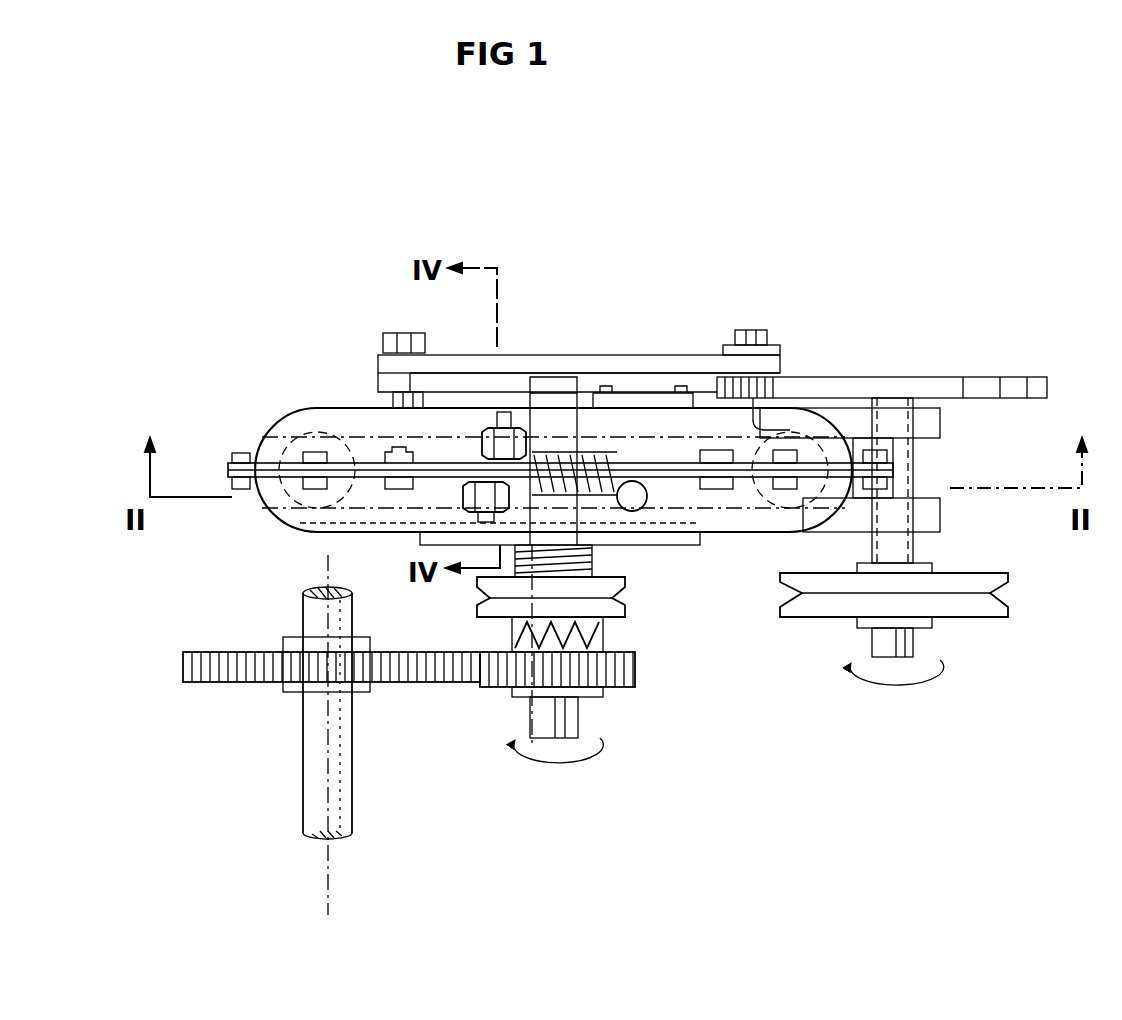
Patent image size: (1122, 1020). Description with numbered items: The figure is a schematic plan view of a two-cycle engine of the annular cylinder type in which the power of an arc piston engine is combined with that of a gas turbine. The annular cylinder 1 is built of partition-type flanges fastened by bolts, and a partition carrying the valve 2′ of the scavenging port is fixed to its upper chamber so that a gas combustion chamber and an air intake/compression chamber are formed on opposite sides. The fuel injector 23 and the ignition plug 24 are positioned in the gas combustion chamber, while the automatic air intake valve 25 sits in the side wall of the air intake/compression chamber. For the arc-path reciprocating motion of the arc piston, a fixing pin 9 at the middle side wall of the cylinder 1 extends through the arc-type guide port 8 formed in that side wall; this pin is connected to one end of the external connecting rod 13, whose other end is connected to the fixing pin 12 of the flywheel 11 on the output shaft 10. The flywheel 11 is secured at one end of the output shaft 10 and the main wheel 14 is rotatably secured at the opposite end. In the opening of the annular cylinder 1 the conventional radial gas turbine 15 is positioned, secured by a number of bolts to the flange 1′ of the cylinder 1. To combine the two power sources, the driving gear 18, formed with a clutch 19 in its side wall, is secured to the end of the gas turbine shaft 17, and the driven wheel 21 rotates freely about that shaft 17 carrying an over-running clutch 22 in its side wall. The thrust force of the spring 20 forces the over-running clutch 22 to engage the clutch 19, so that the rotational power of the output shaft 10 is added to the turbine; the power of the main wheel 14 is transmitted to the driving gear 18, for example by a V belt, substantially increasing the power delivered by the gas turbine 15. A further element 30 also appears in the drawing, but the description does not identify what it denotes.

The annular cylinder 1 is at (327, 423).
The flange 1′ is at (265, 466).
The valve 2′ is at (538, 468).
The arc-type guide port 8 is at (753, 330).
The fixing pin 9 is at (397, 342).
The output shaft 10 is at (913, 467).
The flywheel 11 is at (947, 377).
The fixing pin 12 is at (755, 405).
The external connecting rod 13 is at (652, 362).
The main wheel 14 is at (970, 615).
The radial gas turbine 15 is at (600, 393).
The gas turbine shaft 17 is at (558, 713).
The driving gear 18 is at (617, 687).
The clutch 19 is at (520, 693).
The spring 20 is at (620, 605).
The driven wheel 21 is at (592, 568).
The over-running clutch 22 is at (512, 625).
The fuel injector 23 is at (470, 506).
The ignition plug 24 is at (505, 412).
The air intake valve 25 is at (633, 482).
The rack shaft 30 is at (255, 668).